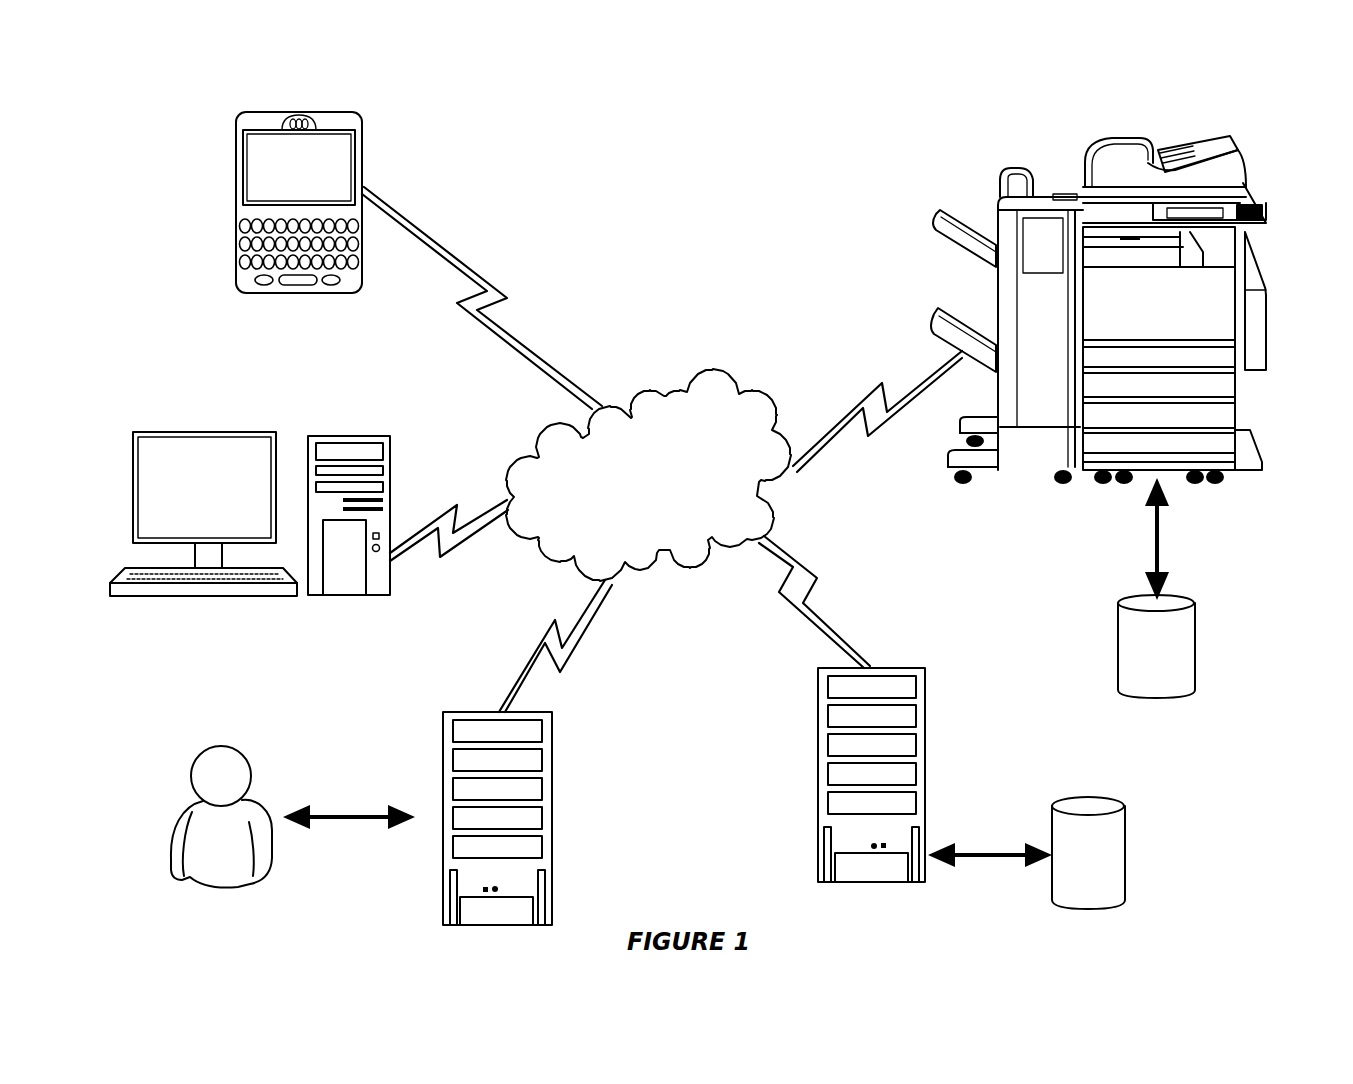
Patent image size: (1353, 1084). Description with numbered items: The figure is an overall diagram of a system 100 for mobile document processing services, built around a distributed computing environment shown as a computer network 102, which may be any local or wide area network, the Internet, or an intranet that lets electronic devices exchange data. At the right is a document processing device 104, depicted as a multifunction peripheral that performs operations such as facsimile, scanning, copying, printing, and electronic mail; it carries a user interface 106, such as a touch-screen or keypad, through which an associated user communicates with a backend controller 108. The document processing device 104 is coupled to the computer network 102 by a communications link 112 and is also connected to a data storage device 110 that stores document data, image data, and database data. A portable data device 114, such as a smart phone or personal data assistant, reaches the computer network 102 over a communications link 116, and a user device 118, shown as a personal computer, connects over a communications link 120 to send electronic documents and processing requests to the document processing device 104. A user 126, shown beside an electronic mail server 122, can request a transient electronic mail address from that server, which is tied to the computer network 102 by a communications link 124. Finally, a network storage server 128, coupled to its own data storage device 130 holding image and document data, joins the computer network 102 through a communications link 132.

The system 100 is at (692, 104).
The computer network 102 is at (713, 370).
The document processing device 104 is at (1231, 140).
The user interface 106 is at (1267, 210).
The controller 108 is at (1228, 312).
The data storage device 110 is at (1195, 603).
The communications link 112 is at (864, 396).
The portable data device 114 is at (240, 118).
The communications link 116 is at (448, 254).
The user device 118 is at (133, 433).
The communications link 120 is at (441, 505).
The electronic mail server 122 is at (443, 712).
The communications link 124 is at (544, 632).
The user 126 is at (193, 764).
The network storage server 128 is at (925, 668).
The data storage device 130 is at (1125, 803).
The communications link 132 is at (822, 590).